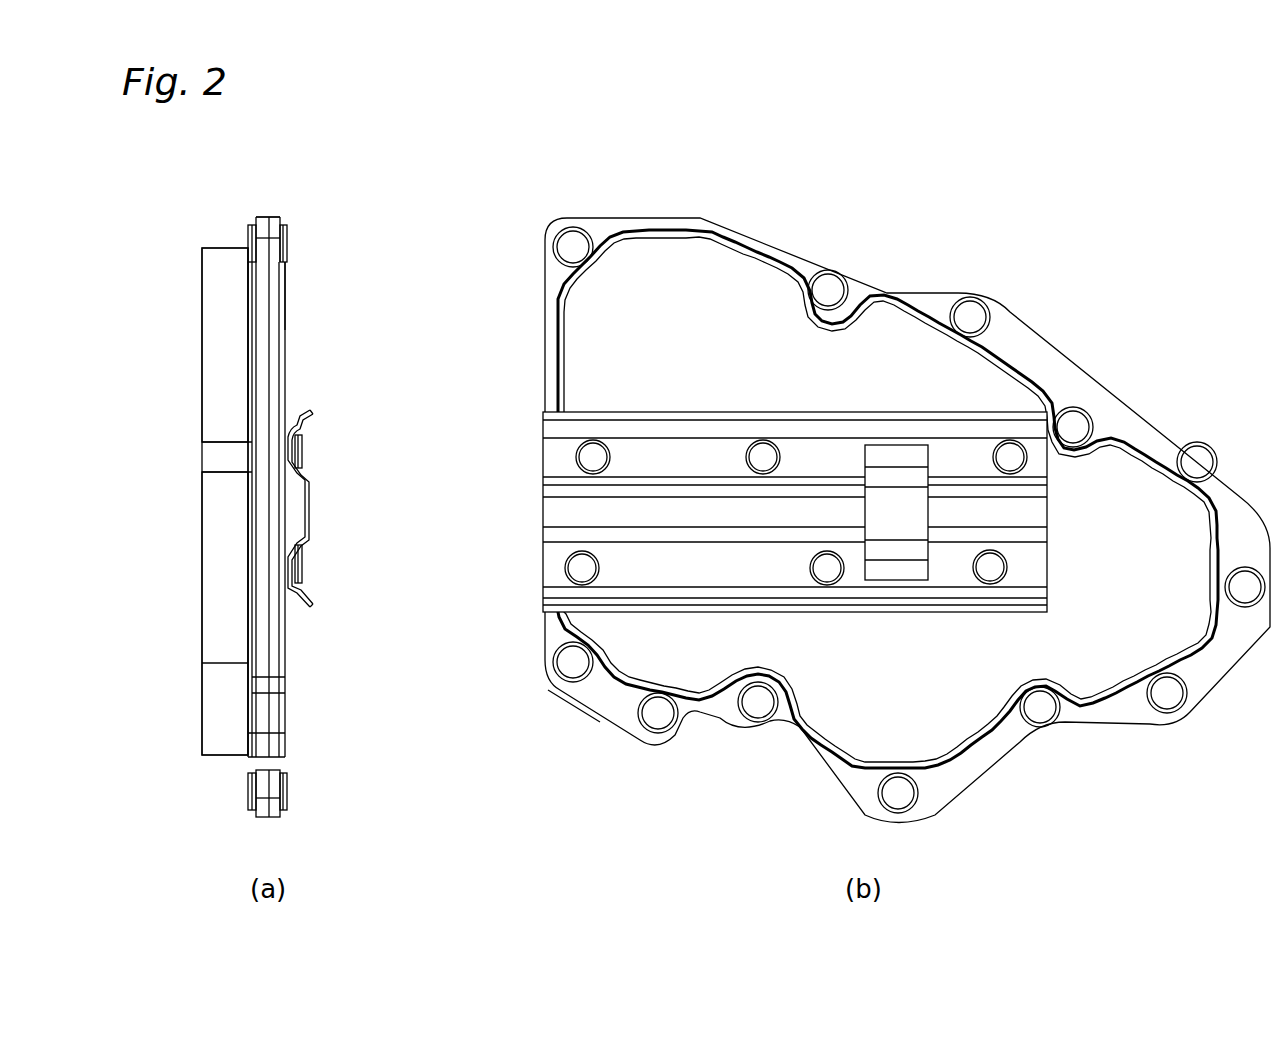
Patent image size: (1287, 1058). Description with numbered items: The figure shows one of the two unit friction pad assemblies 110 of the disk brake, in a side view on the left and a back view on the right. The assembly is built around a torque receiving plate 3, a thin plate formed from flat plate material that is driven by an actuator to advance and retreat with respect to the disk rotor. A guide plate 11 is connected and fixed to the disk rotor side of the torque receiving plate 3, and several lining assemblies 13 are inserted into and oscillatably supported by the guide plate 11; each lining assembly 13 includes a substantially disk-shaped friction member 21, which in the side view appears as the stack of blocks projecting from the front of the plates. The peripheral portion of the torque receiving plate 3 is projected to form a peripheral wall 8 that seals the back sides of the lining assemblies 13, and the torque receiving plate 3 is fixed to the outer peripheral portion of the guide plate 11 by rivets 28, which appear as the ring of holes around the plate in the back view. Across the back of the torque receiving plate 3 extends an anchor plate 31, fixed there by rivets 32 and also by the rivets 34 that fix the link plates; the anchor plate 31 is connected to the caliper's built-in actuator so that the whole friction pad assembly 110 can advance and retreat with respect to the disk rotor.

The friction pad assembly 110 is at (269, 200).
The guide plate 11 is at (250, 204).
The peripheral wall 8 is at (287, 268).
The torque receiving plate 3 is at (298, 329).
The lining assembly 13 is at (198, 310).
The friction member 21 is at (232, 350).
The anchor plate 31 is at (320, 408).
The rivet 32 is at (304, 453).
The rivet 34 is at (764, 452).
The rivet 28 is at (290, 790).